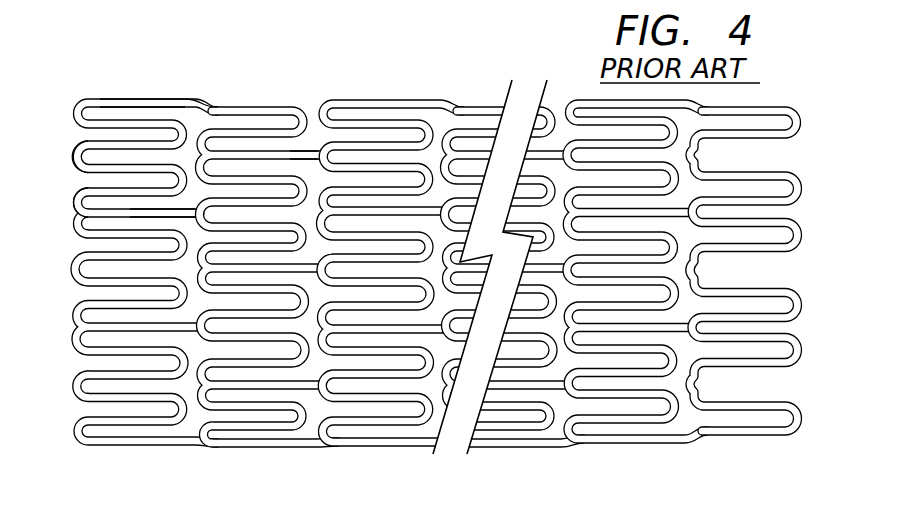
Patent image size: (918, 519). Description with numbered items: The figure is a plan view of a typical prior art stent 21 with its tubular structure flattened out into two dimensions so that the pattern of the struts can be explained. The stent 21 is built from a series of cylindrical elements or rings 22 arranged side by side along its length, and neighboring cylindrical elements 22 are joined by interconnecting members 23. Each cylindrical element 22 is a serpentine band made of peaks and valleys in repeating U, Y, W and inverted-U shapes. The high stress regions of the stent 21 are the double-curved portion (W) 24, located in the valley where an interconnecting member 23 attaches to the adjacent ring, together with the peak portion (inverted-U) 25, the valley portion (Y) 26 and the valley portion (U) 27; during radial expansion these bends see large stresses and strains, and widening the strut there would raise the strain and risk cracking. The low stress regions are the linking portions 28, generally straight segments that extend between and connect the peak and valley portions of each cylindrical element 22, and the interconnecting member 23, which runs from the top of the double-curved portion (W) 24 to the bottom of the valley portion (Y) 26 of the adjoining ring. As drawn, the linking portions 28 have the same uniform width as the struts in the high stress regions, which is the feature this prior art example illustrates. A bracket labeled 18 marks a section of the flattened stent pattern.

The stent section 18 is at (343, 455).
The prior art stent 21 is at (436, 278).
The cylindrical element 22 is at (127, 99).
The interconnecting member 23 is at (127, 220).
The double-curved portion (W) 24 is at (77, 204).
The peak portion (inverted-U) 25 is at (190, 131).
The valley portion (Y) 26 is at (334, 127).
The valley portion (U) 27 is at (76, 155).
The linking portion 28 is at (110, 360).